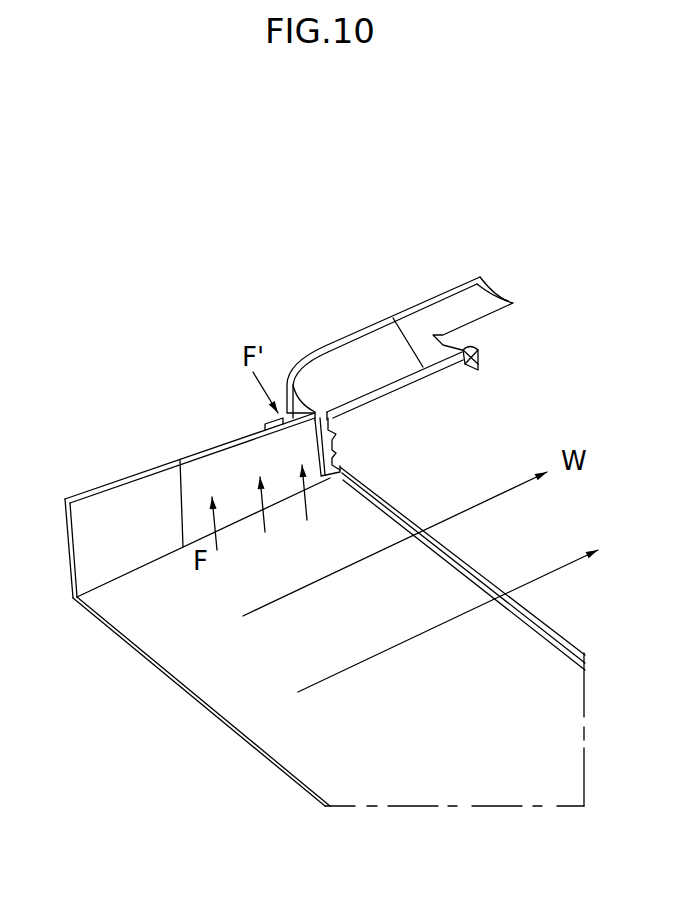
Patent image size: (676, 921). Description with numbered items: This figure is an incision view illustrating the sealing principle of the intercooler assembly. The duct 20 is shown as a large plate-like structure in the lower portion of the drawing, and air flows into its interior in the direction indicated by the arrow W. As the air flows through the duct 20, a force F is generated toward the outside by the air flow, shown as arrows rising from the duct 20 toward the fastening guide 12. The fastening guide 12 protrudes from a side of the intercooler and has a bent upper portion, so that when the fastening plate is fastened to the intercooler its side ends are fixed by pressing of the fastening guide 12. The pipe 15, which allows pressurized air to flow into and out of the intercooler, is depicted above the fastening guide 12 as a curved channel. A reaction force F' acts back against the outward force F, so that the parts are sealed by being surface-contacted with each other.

The fastening guide 12 is at (266, 427).
The pipe 15 is at (427, 312).
The duct 20 is at (170, 655).